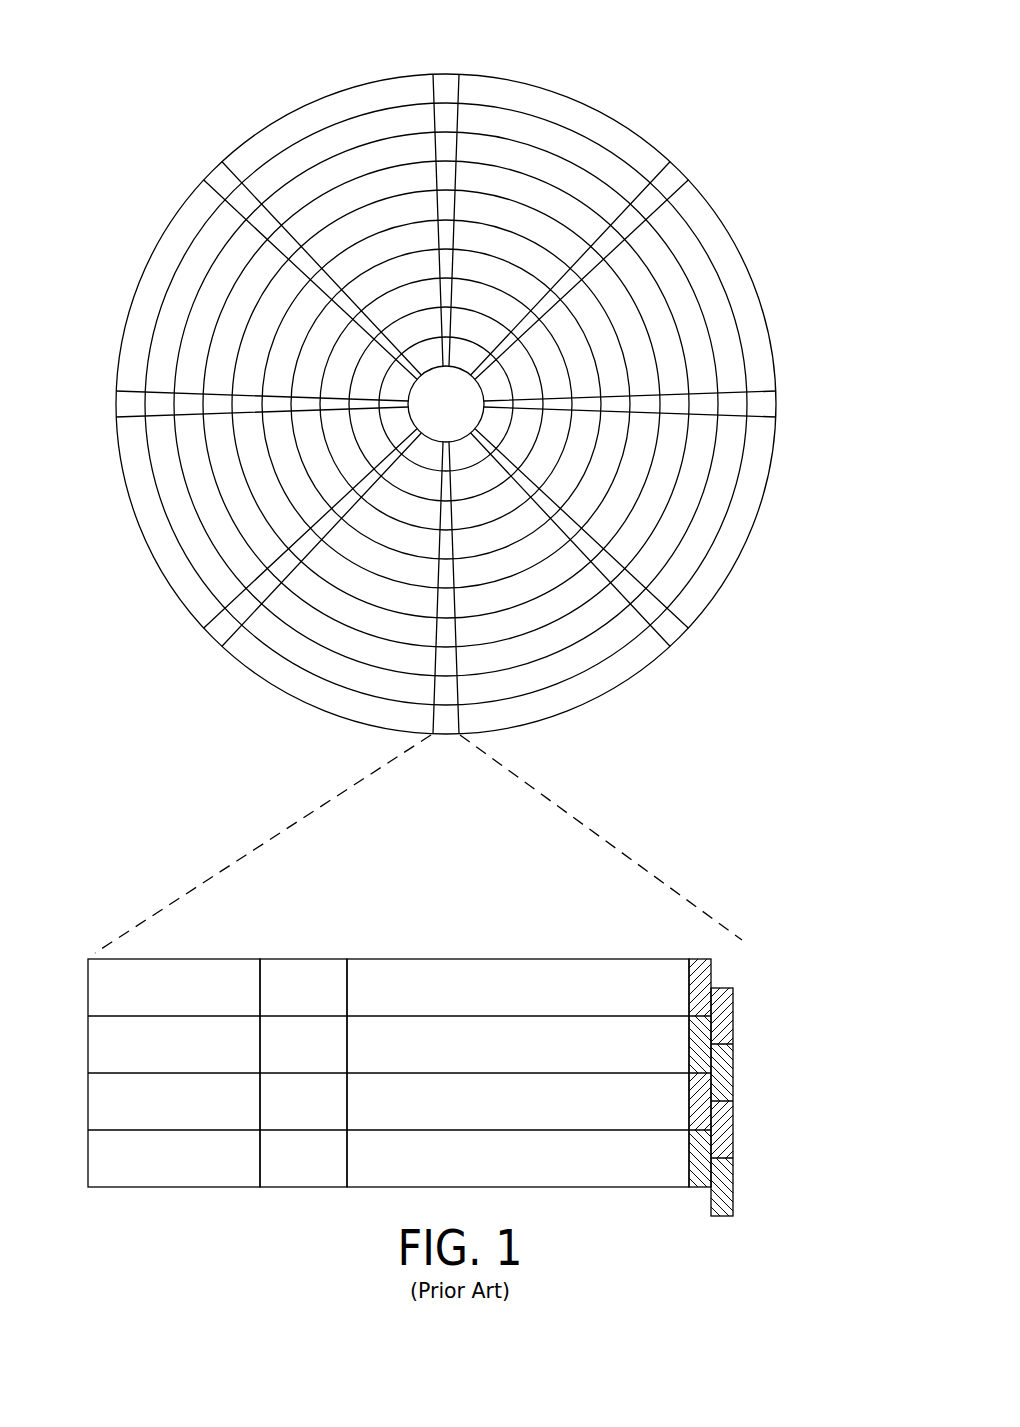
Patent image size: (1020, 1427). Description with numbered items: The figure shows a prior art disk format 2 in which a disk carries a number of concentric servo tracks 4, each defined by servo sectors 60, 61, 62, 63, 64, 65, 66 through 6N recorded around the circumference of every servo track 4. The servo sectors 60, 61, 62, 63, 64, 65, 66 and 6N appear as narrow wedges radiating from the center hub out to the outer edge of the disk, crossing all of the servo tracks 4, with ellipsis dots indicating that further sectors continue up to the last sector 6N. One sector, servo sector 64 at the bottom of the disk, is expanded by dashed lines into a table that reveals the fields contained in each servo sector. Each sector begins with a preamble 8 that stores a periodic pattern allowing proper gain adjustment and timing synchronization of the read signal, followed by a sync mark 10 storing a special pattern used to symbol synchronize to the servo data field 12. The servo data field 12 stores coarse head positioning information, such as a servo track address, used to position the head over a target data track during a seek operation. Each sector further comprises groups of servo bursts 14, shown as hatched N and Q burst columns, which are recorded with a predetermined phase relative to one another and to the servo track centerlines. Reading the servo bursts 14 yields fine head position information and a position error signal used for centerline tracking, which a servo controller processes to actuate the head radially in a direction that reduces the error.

The disk format 2 is at (205, 78).
The servo tracks 4 is at (580, 120).
The servo sector 60 is at (447, 74).
The servo sector 61 is at (670, 178).
The servo sector 62 is at (767, 403).
The servo sector 63 is at (670, 627).
The servo sector 64 is at (300, 808).
The servo sector 65 is at (218, 630).
The servo sector 66 is at (117, 404).
The servo sector 6N is at (222, 175).
The preamble 8 is at (183, 959).
The sync mark 10 is at (305, 959).
The servo data field 12 is at (503, 959).
The servo bursts 14 is at (727, 955).